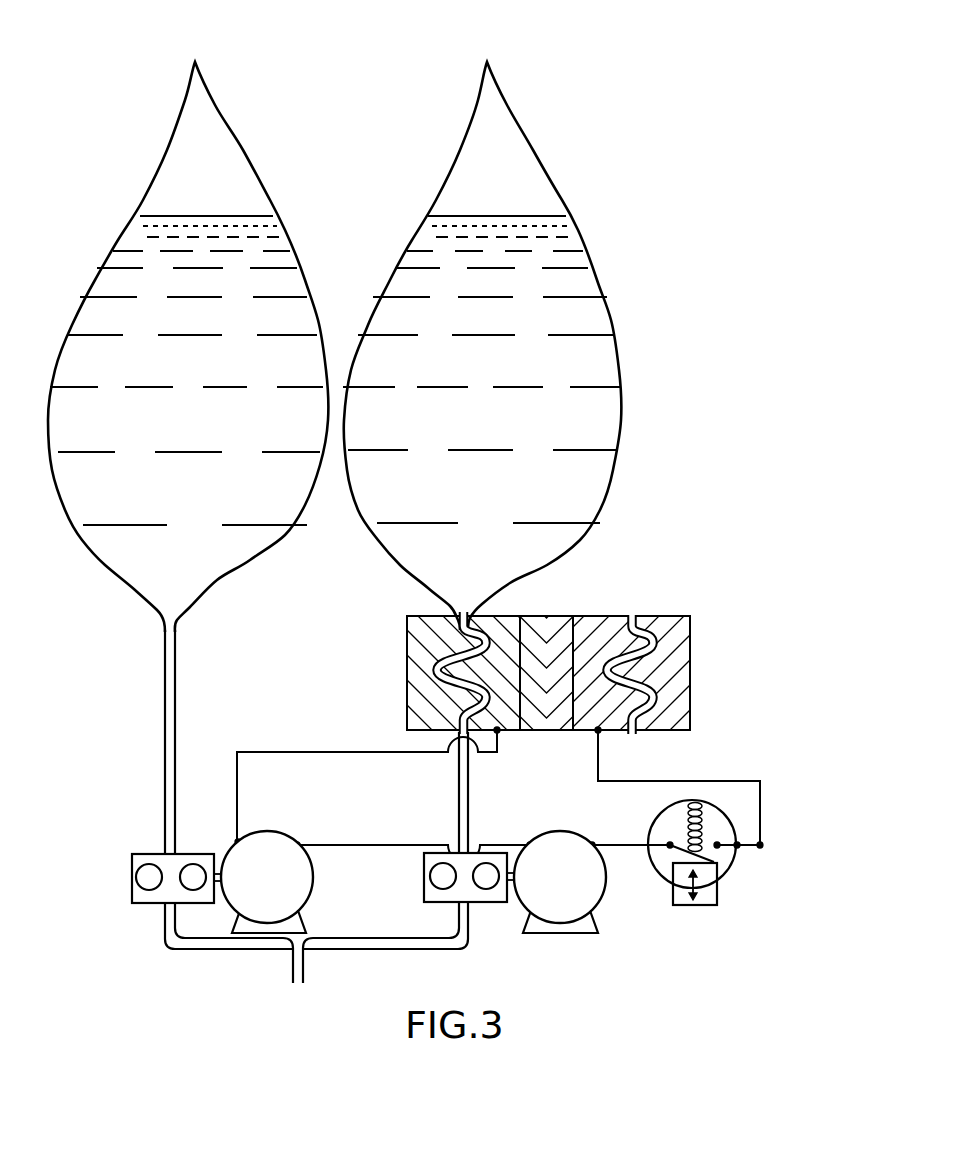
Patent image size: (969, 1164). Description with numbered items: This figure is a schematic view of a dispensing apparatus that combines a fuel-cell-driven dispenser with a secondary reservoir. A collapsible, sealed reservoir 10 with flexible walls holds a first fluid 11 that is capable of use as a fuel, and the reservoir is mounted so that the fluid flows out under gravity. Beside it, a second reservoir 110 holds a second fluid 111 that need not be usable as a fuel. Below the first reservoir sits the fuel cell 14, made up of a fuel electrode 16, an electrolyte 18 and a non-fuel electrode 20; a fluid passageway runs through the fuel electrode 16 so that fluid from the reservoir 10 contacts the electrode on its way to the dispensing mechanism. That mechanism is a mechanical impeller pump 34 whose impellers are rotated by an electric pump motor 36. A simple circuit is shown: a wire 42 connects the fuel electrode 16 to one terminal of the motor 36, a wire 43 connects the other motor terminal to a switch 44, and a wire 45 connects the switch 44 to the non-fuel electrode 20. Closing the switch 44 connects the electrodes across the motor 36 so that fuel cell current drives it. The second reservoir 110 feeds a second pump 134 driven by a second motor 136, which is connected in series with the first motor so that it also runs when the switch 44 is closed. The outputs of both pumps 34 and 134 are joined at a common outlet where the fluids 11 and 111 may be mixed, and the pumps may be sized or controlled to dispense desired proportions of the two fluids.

The reservoir 10 is at (514, 346).
The fluid 11 is at (572, 300).
The fuel cell 14 is at (537, 665).
The fuel electrode 16 is at (410, 638).
The electrolyte 18 is at (563, 616).
The non-fuel electrode 20 is at (685, 641).
The pump 34 is at (424, 878).
The motor 36 is at (574, 916).
The wire 42 is at (358, 752).
The wire 43 is at (628, 845).
The switch 44 is at (780, 862).
The wire 45 is at (760, 810).
The second reservoir 110 is at (210, 347).
The second fluid 111 is at (262, 266).
The second pump 134 is at (132, 893).
The second motor 136 is at (287, 916).